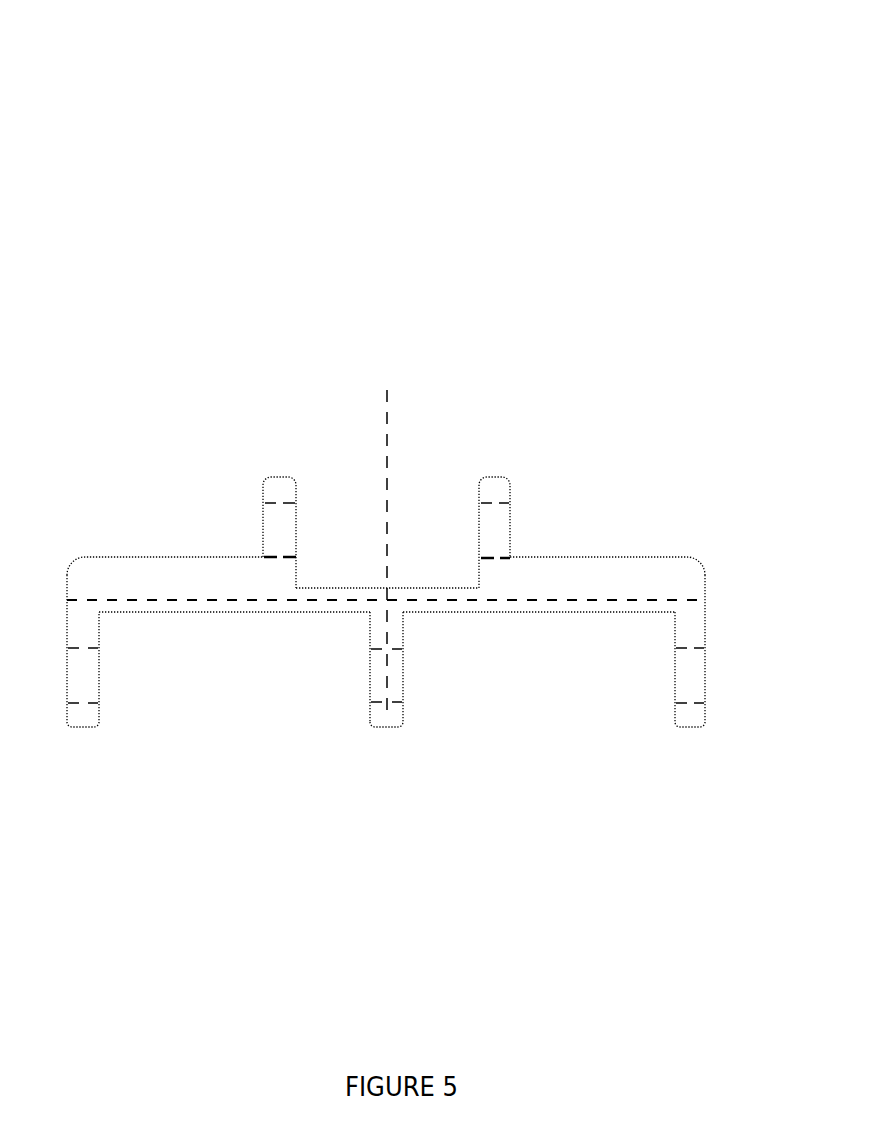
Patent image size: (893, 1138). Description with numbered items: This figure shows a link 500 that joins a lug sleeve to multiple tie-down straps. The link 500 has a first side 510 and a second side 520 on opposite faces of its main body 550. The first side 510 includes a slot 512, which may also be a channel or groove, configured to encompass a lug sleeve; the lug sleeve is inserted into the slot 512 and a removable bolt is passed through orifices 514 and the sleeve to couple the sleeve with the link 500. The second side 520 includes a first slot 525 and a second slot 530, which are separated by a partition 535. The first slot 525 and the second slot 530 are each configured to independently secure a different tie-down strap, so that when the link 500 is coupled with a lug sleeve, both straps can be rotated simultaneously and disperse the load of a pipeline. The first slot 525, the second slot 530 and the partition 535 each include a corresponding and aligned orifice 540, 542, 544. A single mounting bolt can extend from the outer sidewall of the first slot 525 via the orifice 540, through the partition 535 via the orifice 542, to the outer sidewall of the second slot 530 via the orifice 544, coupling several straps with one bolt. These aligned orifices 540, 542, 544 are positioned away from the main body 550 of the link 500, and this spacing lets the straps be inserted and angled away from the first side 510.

The link 500 is at (113, 93).
The first side 510 is at (497, 480).
The slot 512 is at (372, 590).
The orifices 514 is at (276, 528).
The second side 520 is at (387, 713).
The first slot 525 is at (182, 606).
The second slot 530 is at (563, 605).
The partition 535 is at (369, 642).
The orifice 540 is at (87, 668).
The orifice 542 is at (397, 688).
The orifice 544 is at (685, 669).
The main body 550 is at (308, 590).